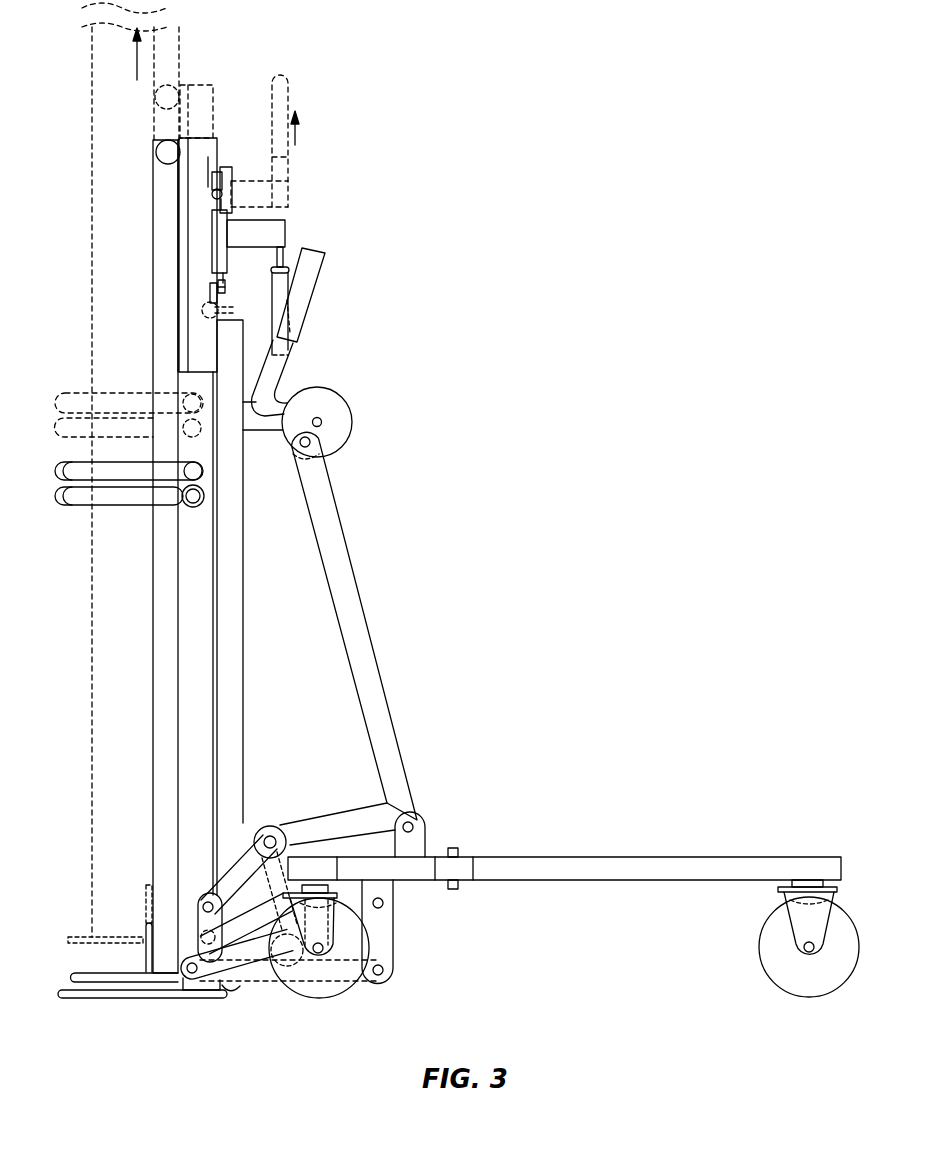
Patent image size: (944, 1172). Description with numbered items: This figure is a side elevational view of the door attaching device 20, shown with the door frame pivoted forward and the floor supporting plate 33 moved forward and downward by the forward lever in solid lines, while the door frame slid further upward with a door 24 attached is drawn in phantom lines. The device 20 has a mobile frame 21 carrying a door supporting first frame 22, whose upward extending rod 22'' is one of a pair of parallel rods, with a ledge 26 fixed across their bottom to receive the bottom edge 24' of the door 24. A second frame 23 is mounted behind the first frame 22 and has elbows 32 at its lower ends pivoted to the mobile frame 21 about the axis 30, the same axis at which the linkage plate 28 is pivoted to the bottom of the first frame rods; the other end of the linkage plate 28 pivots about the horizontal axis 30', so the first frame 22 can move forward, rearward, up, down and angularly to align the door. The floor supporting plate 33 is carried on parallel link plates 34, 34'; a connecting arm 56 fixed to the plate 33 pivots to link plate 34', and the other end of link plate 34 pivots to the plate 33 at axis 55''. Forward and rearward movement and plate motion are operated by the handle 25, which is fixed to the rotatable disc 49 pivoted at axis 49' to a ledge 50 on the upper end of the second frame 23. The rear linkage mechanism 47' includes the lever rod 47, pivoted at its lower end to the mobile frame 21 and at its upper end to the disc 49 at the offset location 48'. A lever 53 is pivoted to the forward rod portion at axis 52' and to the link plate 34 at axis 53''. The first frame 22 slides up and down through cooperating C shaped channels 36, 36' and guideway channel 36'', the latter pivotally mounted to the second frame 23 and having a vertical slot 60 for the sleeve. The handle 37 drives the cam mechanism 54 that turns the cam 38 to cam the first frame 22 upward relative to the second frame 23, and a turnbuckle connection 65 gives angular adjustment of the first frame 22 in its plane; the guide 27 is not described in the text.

The door attaching device 20 is at (468, 756).
The mobile frame 21 is at (625, 857).
The first frame 22 is at (143, 556).
The upward extending rod 22'' is at (139, 95).
The second frame 23 is at (236, 671).
The door 24 is at (103, 470).
The bottom edge of the door 24' is at (126, 923).
The handle 25 is at (322, 288).
The ledge 26 is at (70, 930).
The mast guide 27 is at (186, 258).
The linkage plate 28 is at (252, 998).
The axis 30 is at (218, 999).
The horizontal axis 30' is at (337, 952).
The elbow 32 is at (270, 827).
The floor supporting plate 33 is at (130, 990).
The parallel link plate 34 is at (198, 898).
The parallel link plate 34' is at (411, 931).
The C shaped channel 36 is at (171, 295).
The guideway 36' is at (205, 78).
The guideway channel 36'' is at (230, 230).
The handle 37 is at (290, 92).
The cam 38 is at (276, 188).
The lever rod 47 is at (357, 626).
The rear linkage mechanism 47' is at (446, 827).
The offset location 48' is at (291, 475).
The rotatable disc 49 is at (330, 395).
The axis 49' is at (363, 407).
The ledge 50 is at (255, 433).
The axis 52' is at (337, 797).
The lever 53 is at (249, 850).
The axis 53'' is at (289, 1001).
The cam mechanism 54 is at (288, 197).
The axis 55'' is at (217, 1022).
The connecting arm 56 is at (258, 978).
The vertical slot 60 is at (177, 197).
The turnbuckle connection 65 is at (212, 230).